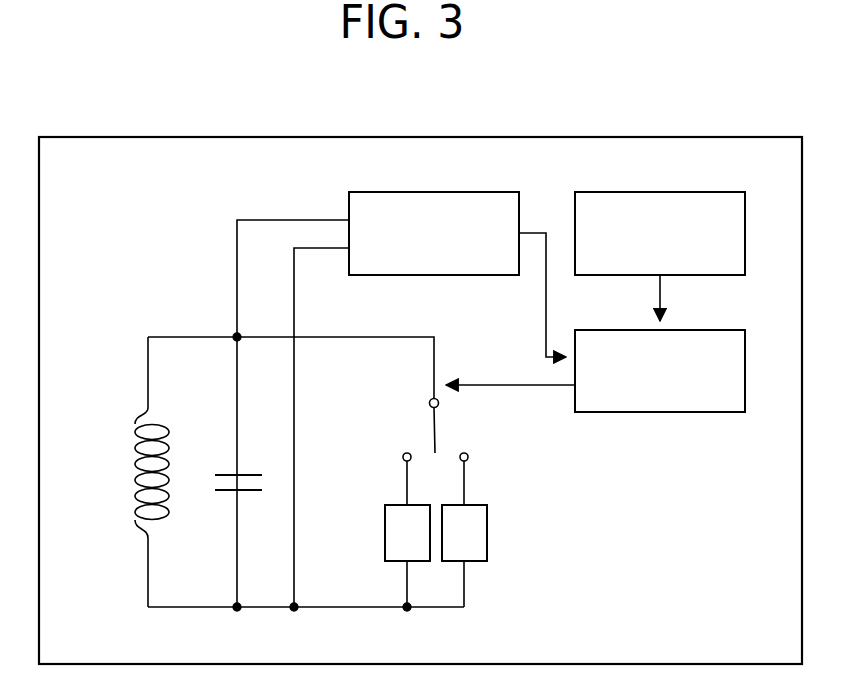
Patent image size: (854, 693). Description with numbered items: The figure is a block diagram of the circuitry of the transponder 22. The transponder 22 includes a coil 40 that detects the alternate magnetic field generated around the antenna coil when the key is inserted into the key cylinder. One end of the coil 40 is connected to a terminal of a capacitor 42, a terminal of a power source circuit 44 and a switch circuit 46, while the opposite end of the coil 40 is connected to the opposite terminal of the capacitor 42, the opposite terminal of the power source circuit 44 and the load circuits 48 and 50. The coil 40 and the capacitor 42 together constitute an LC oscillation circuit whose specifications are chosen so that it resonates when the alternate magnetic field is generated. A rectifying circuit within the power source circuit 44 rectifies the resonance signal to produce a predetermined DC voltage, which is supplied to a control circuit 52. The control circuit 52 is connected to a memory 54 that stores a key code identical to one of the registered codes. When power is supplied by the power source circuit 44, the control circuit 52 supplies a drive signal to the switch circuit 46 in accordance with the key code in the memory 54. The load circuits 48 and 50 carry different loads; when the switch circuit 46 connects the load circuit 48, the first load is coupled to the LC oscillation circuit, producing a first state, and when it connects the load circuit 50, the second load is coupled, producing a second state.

The transponder 22 is at (327, 135).
The power source circuit 44 is at (429, 191).
The memory 54 is at (660, 191).
The control circuit 52 is at (660, 413).
The coil 40 is at (138, 535).
The capacitor 42 is at (228, 493).
The switch circuit 46 is at (432, 422).
The load circuit 48 is at (384, 511).
The load circuit 50 is at (488, 532).